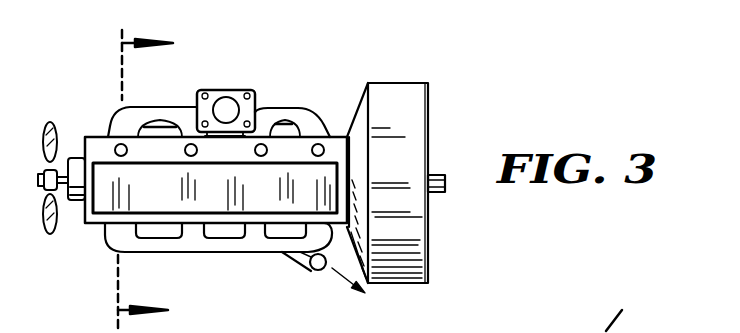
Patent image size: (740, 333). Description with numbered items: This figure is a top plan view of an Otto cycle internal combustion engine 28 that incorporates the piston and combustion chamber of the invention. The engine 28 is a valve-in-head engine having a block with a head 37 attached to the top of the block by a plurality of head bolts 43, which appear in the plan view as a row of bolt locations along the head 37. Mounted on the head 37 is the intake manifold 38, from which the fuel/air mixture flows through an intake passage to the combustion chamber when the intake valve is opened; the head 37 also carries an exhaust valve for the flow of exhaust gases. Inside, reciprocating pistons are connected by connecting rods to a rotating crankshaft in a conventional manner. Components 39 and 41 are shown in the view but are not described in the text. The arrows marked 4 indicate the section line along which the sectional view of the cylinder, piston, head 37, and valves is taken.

The internal combustion engine 28 is at (333, 61).
The head 37 is at (152, 150).
The mounting plate with bore 39 is at (228, 107).
The intake manifold 38 is at (280, 114).
The head bolts 43 is at (266, 145).
The crankcase pan 41 is at (249, 245).
The section line 4- 4 is at (128, 177).